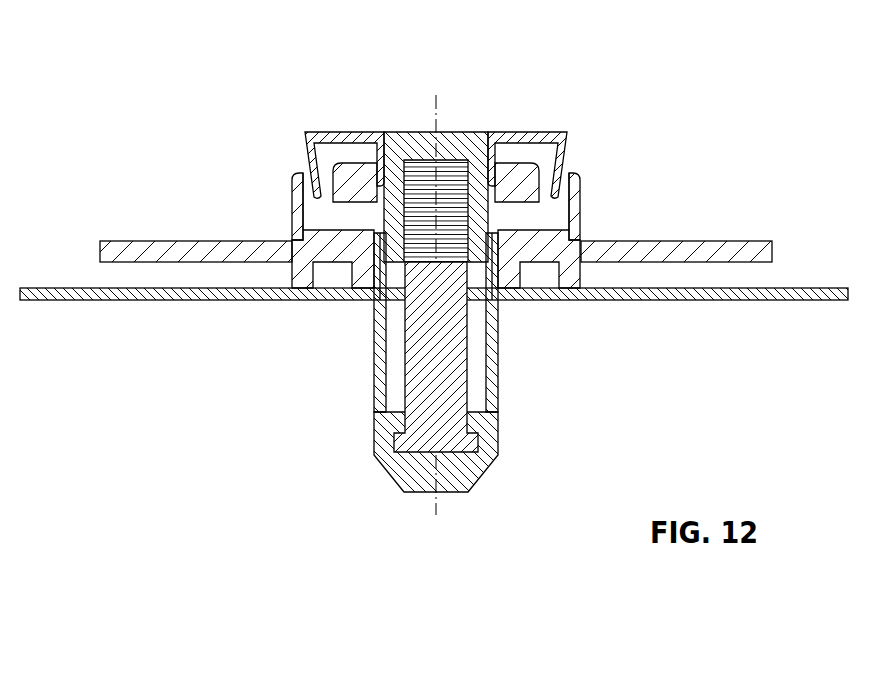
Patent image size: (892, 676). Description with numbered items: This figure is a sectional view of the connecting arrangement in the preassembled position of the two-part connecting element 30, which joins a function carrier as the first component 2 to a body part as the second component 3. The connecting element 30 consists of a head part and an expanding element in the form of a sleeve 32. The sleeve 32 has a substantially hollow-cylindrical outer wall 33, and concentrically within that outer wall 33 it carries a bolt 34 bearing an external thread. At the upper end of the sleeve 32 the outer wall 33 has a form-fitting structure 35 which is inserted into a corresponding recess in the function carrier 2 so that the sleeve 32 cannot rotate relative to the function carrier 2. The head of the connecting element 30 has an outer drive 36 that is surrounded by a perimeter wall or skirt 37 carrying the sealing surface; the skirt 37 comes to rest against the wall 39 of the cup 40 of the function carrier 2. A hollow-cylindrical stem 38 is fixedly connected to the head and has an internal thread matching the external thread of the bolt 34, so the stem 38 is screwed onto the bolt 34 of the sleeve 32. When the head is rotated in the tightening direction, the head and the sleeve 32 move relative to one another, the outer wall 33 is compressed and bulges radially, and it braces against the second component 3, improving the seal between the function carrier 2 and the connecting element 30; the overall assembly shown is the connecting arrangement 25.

The function carrier 2 is at (665, 241).
The second component 3 is at (178, 298).
The fastening assembly 25 is at (380, 246).
The connecting element 30 is at (469, 116).
The sleeve 32 is at (517, 327).
The outer wall 33 is at (380, 347).
The bolt 34 is at (452, 352).
The form-fitting structure 35 is at (380, 248).
The outer drive 36 is at (460, 152).
The skirt 37 is at (303, 148).
The stem 38 is at (392, 253).
The wall 39 is at (289, 192).
The cup 40 is at (587, 206).